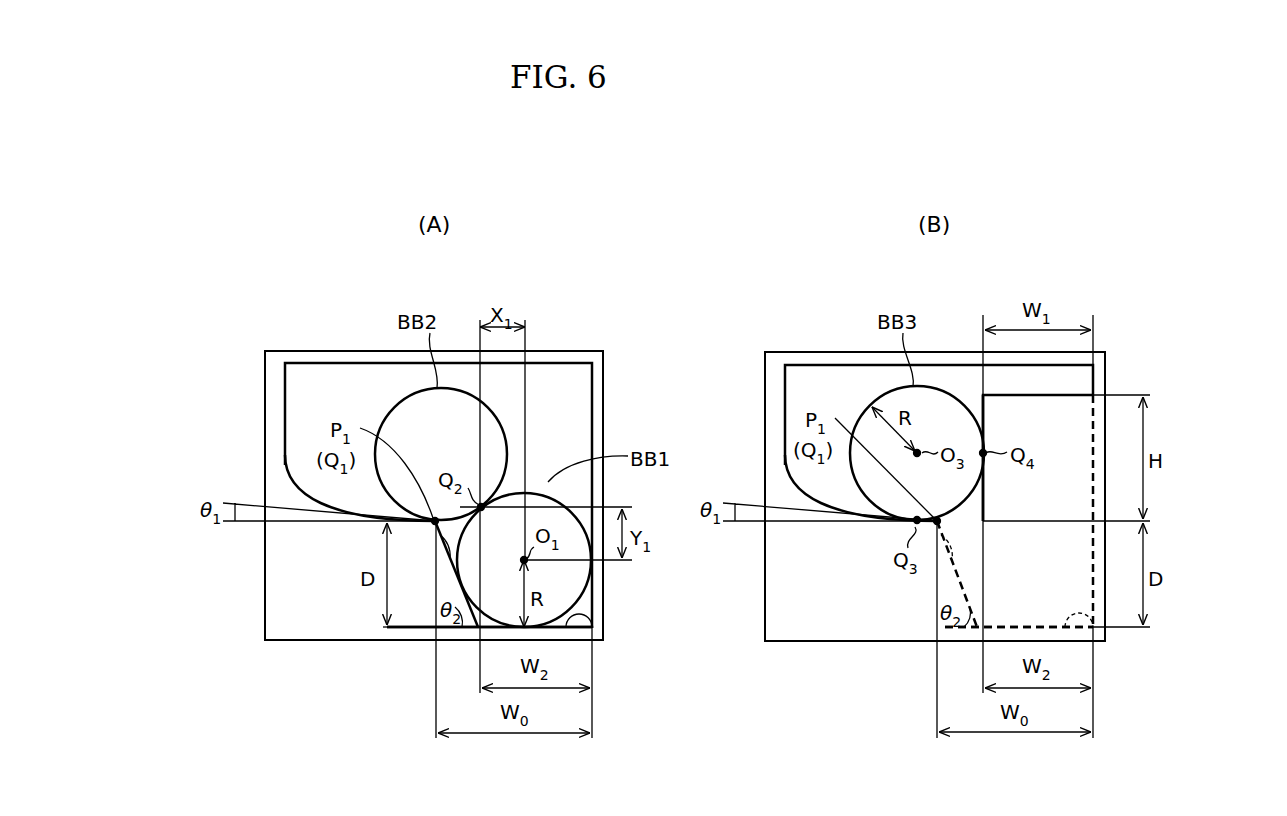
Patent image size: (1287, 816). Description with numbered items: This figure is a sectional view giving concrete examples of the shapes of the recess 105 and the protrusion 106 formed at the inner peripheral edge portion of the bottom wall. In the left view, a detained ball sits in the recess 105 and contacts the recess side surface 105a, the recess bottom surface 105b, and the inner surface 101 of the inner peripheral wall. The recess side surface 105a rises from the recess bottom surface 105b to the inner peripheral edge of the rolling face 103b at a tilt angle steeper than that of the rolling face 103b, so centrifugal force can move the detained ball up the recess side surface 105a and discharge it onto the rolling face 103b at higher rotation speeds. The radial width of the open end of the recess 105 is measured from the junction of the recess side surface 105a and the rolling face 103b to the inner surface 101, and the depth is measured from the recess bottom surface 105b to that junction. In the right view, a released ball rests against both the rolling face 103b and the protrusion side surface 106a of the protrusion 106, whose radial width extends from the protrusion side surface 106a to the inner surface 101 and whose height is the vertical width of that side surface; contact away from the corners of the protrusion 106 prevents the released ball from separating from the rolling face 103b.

The inner surface of the inner peripheral wall 101 is at (592, 382).
The rolling face 103b is at (365, 521).
The recess 105 is at (582, 612).
The recess side surface 105a is at (435, 523).
The recess bottom surface 105b is at (593, 623).
The protrusion 106 is at (1062, 431).
The protrusion side surface 106a is at (981, 405).